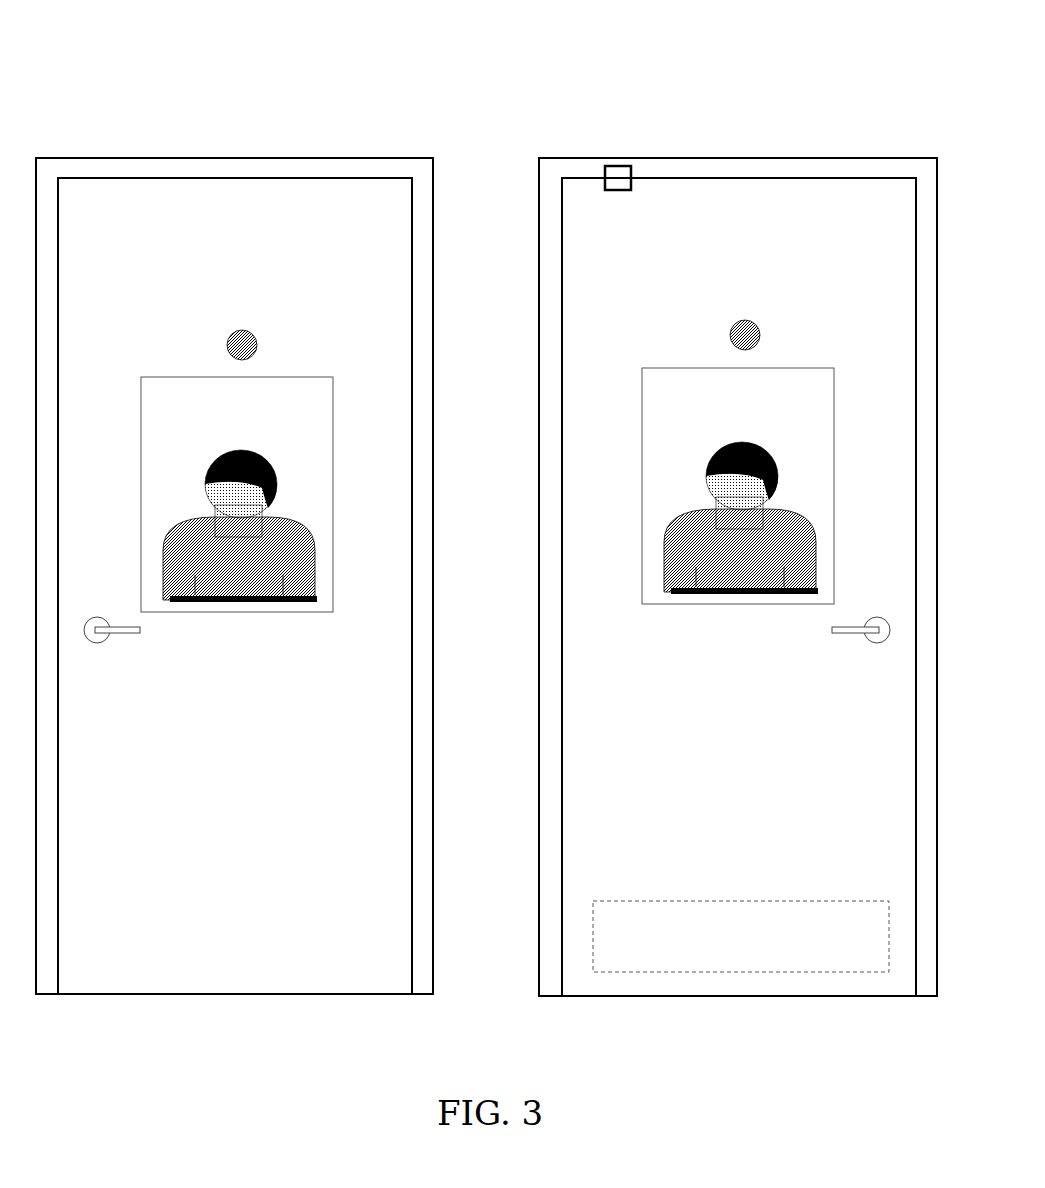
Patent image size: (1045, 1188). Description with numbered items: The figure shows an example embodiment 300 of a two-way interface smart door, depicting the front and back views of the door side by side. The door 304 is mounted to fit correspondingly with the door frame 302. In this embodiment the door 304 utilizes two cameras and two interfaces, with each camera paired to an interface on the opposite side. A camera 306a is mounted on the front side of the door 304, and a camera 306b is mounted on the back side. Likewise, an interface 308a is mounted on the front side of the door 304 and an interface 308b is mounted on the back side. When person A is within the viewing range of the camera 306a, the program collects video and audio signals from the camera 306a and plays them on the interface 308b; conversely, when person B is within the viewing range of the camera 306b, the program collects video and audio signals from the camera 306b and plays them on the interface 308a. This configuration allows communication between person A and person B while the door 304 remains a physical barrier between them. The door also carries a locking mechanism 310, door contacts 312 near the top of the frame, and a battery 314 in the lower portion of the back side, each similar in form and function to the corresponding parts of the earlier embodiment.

The example embodiment 300 is at (508, 100).
The door frame 302 is at (238, 157).
The door 304 is at (170, 293).
The camera 306a is at (257, 333).
The camera 306b is at (760, 320).
The interface 308a is at (292, 613).
The interface 308b is at (737, 607).
The locking mechanism 310 is at (878, 643).
The door contacts 312 is at (620, 195).
The battery 314 is at (710, 902).